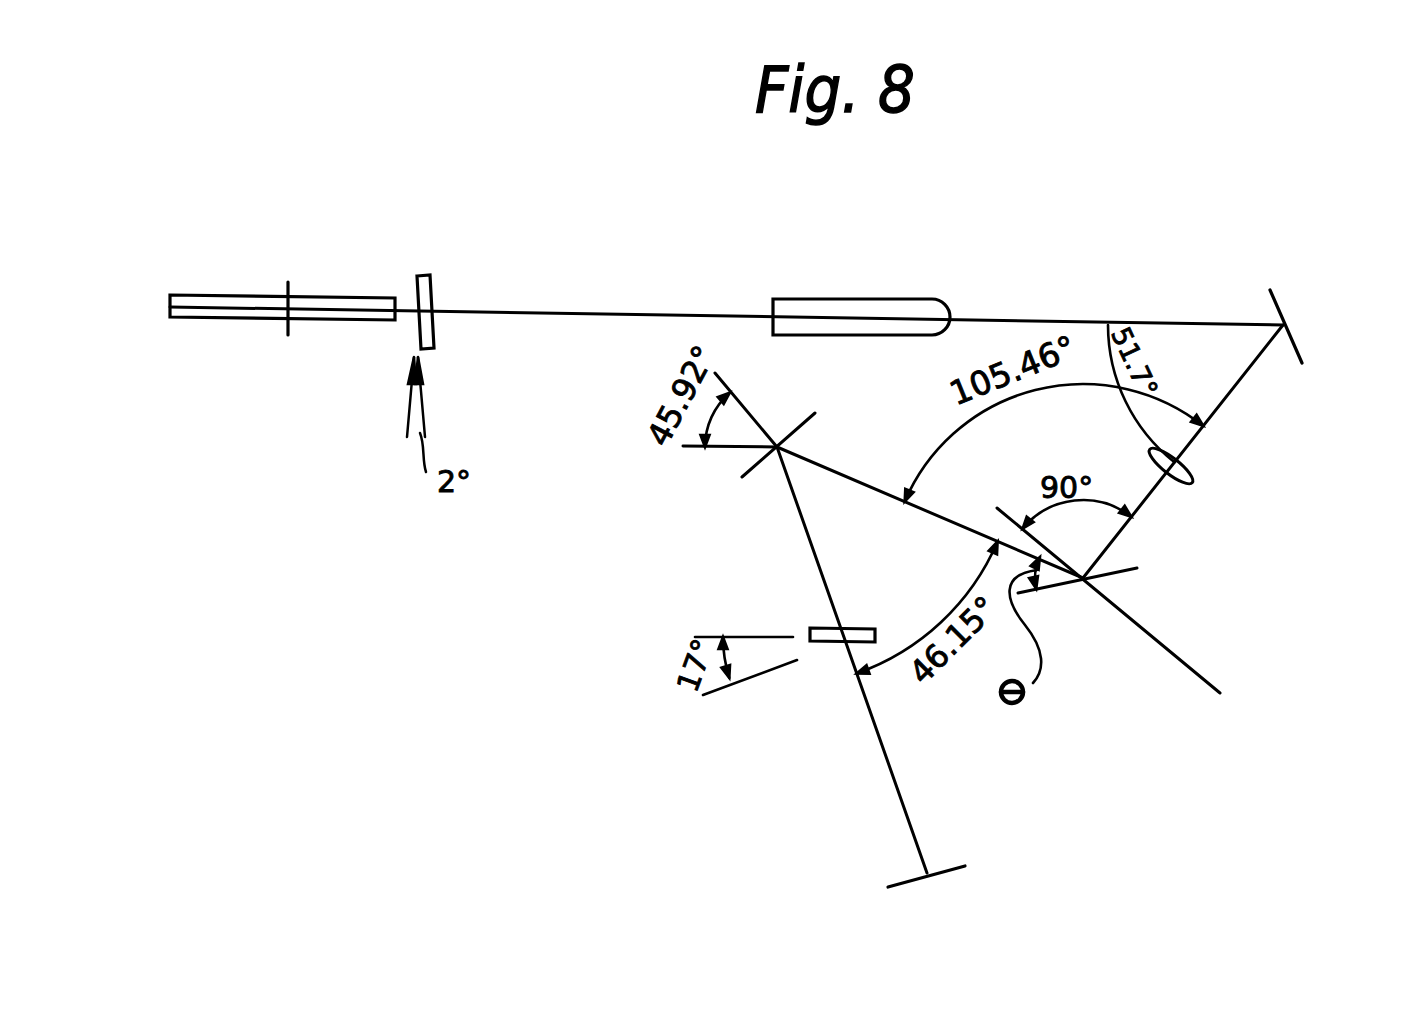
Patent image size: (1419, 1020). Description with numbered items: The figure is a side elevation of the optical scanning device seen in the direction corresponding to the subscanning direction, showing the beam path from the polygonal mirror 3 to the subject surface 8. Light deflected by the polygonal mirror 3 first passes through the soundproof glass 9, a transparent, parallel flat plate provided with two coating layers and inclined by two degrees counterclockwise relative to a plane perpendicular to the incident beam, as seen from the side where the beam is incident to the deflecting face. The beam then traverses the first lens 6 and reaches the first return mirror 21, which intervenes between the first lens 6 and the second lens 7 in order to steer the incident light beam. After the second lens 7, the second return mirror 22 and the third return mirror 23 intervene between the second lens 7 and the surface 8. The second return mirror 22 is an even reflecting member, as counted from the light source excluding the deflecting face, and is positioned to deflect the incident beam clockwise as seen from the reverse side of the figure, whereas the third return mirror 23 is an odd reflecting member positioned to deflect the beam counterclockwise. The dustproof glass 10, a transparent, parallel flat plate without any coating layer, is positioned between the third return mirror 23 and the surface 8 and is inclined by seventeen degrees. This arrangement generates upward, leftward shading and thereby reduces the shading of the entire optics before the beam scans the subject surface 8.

The polygonal mirror 3 is at (325, 295).
The soundproof glass 9 is at (432, 292).
The first lens 6 is at (868, 298).
The first return mirror 21 is at (1287, 321).
The second lens 7 is at (1177, 487).
The second return mirror 22 is at (1085, 583).
The third return mirror 23 is at (765, 462).
The dustproof glass 10 is at (832, 645).
The subject surface 8 is at (953, 870).